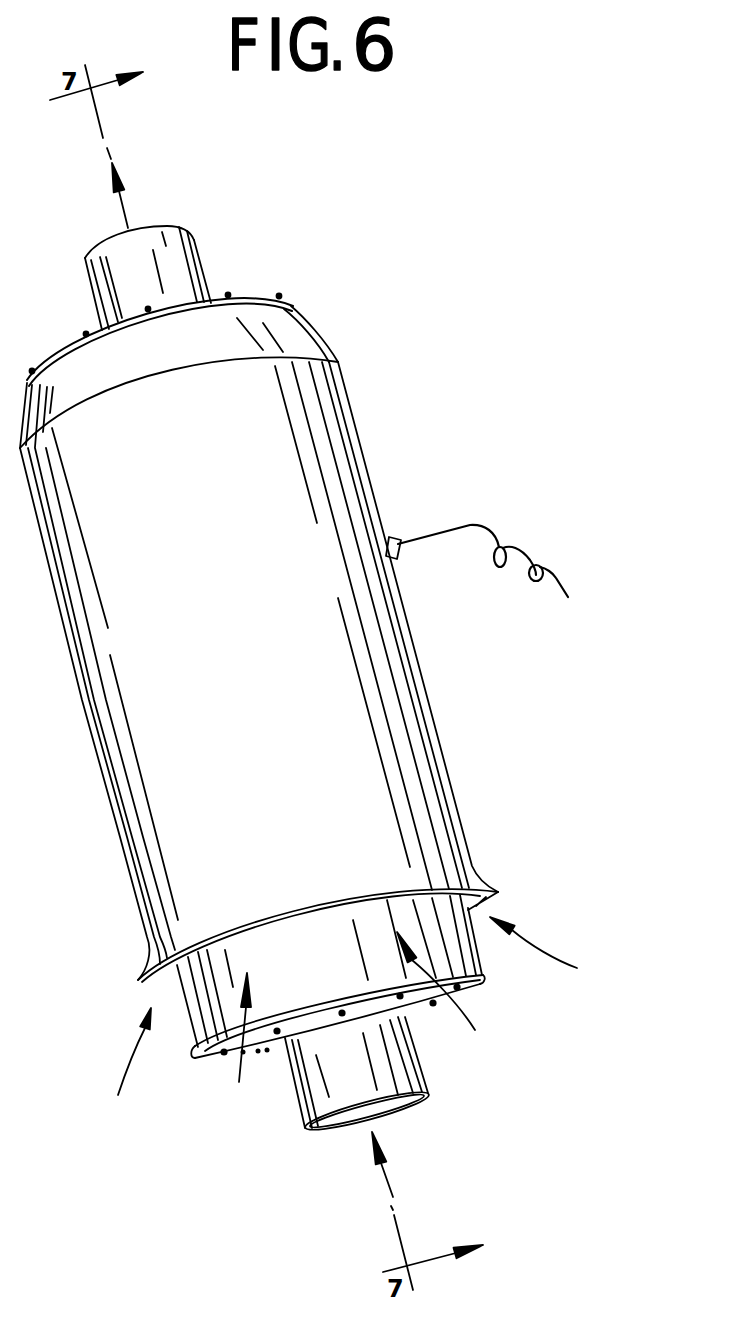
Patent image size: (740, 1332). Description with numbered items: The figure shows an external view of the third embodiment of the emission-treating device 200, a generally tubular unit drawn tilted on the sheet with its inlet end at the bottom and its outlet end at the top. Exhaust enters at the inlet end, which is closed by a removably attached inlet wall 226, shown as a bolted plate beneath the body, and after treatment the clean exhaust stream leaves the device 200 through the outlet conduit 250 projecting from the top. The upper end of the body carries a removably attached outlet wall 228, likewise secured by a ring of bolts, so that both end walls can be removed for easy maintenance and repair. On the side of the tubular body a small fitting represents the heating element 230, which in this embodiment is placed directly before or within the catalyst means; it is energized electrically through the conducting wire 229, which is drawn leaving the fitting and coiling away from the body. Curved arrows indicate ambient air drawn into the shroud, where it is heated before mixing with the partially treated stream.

The third embodiment device 200 is at (489, 761).
The outlet conduit 250 is at (179, 270).
The outlet wall 228 is at (249, 300).
The heating element 230 is at (395, 535).
The conducting wire 229 is at (556, 578).
The inlet wall 226 is at (432, 1008).